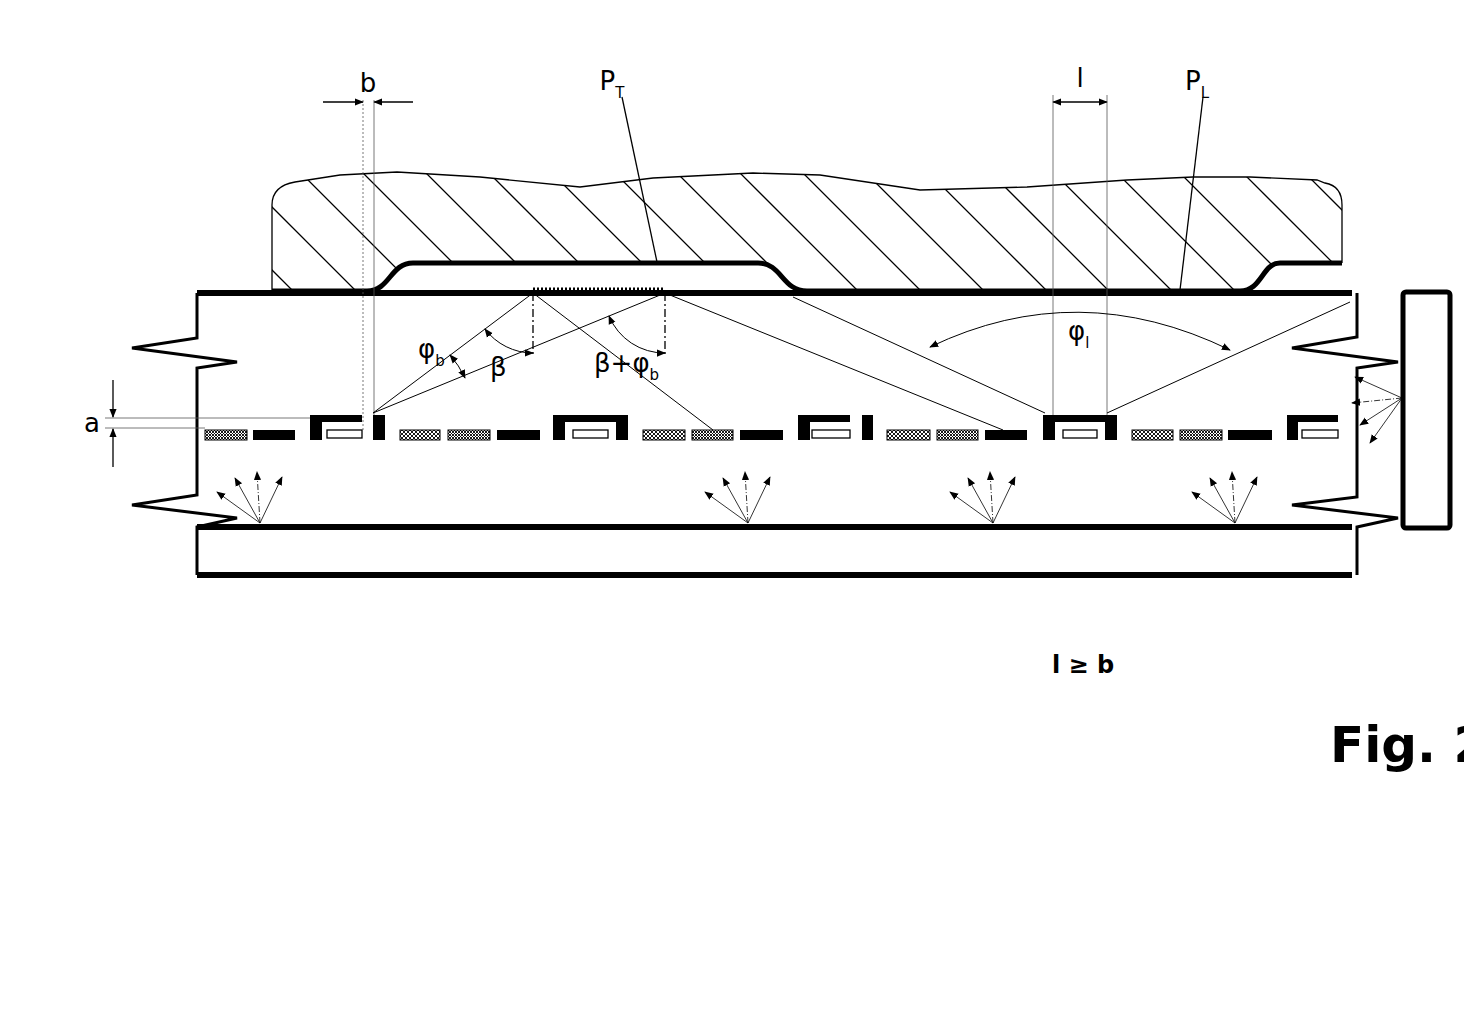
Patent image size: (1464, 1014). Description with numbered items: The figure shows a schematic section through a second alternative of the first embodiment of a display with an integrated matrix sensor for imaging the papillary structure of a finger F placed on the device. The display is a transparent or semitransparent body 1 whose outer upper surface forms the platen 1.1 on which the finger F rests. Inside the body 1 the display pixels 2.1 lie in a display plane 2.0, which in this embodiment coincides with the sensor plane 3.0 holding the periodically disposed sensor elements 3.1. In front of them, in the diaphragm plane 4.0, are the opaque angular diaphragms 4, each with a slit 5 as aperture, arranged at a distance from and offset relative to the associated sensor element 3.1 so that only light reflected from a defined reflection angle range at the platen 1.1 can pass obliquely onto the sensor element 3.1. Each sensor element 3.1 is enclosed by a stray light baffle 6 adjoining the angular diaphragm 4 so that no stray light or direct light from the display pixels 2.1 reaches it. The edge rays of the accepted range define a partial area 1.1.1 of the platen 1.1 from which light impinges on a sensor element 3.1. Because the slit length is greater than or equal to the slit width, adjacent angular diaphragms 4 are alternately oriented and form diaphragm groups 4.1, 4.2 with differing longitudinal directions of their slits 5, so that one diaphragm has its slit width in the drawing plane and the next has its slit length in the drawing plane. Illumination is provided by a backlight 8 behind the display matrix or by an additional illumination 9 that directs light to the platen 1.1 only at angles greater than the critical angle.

The transparent or semitransparent body 1 is at (265, 335).
The platen 1.1 is at (233, 290).
The partial area of the platen 1.1.1 is at (623, 290).
The display plane 2.0 is at (774, 478).
The display pixels 2.1 is at (1032, 413).
The sensor plane 3.0 is at (138, 432).
The sensor element 3.1 is at (590, 438).
The angular diaphragm 4 is at (1075, 418).
The diaphragm plane 4.0 is at (138, 414).
The diaphragm group 4.1 is at (847, 418).
The diaphragm group 4.2 is at (1050, 430).
The slit 5 is at (857, 415).
The stray light baffle 6 is at (1107, 415).
The backlight 8 is at (298, 553).
The additional illumination 9 is at (1425, 308).
The finger F is at (1273, 213).